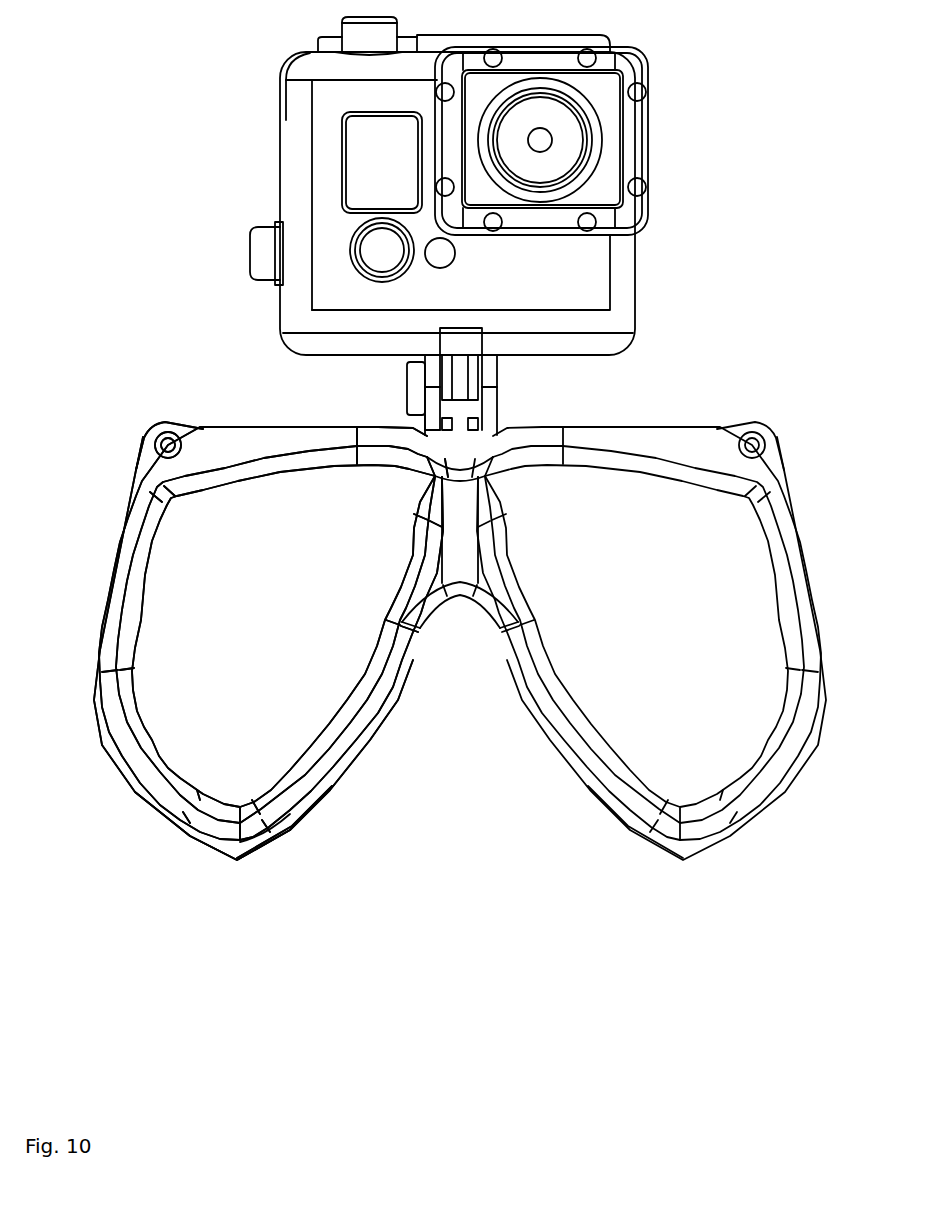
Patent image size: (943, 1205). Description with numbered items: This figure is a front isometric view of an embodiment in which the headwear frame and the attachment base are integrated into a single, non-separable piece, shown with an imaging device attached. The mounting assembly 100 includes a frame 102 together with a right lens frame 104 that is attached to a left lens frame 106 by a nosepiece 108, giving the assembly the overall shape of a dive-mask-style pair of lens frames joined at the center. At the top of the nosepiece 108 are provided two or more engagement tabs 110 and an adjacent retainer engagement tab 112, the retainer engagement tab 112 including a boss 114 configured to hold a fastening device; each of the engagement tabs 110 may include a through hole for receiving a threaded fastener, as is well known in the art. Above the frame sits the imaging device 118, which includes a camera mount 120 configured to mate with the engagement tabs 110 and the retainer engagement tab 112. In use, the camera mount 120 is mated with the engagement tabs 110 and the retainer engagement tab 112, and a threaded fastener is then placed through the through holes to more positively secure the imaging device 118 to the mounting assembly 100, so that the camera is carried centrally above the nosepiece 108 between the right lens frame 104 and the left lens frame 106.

The mounting assembly 100 is at (130, 424).
The frame 102 is at (107, 687).
The right lens frame 104 is at (277, 802).
The left lens frame 106 is at (780, 768).
The nosepiece 108 is at (455, 575).
The engagement tabs 110 is at (490, 404).
The retainer engagement tab 112 is at (432, 414).
The boss 114 is at (410, 380).
The imaging device 118 is at (640, 163).
The camera mount 120 is at (487, 345).